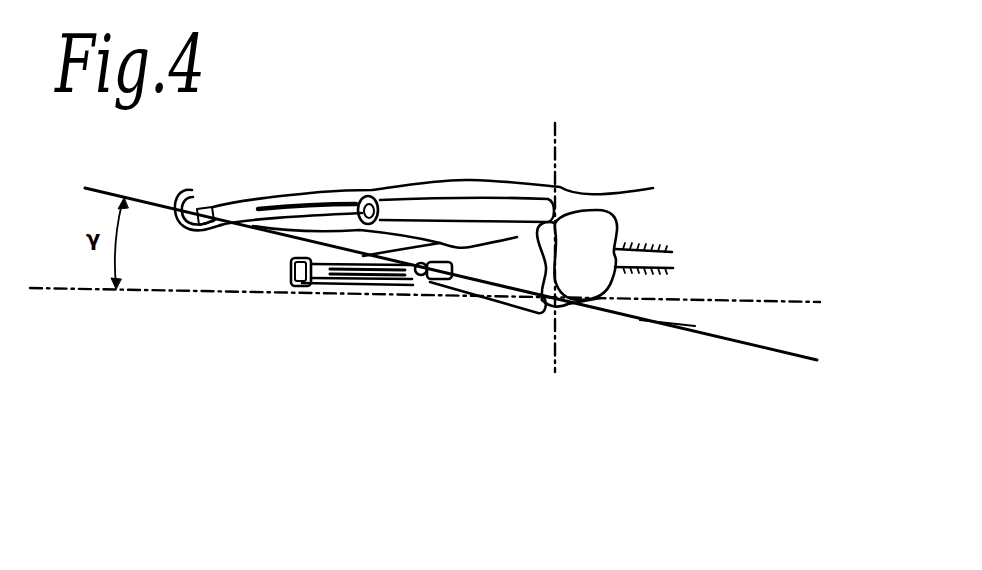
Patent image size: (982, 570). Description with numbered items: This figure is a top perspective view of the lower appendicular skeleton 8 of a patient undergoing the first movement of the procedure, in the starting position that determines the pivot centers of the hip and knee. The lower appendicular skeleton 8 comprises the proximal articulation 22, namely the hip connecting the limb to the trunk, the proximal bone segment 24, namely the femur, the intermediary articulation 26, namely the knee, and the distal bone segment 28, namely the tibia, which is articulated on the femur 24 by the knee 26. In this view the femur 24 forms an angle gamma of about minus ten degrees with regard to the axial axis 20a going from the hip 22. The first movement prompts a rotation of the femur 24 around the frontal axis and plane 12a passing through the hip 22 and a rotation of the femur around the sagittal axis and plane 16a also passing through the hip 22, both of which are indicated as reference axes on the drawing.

The lower appendicular skeleton 8 is at (281, 341).
The distal bone segment 28 is at (333, 293).
The intermediary articulation 26 is at (405, 294).
The proximal bone segment 24 is at (422, 337).
The sagittal axis and plane 16a is at (550, 362).
The proximal articulation 22 is at (553, 305).
The frontal axis and plane 12a is at (570, 302).
The axial axis 20a is at (737, 302).